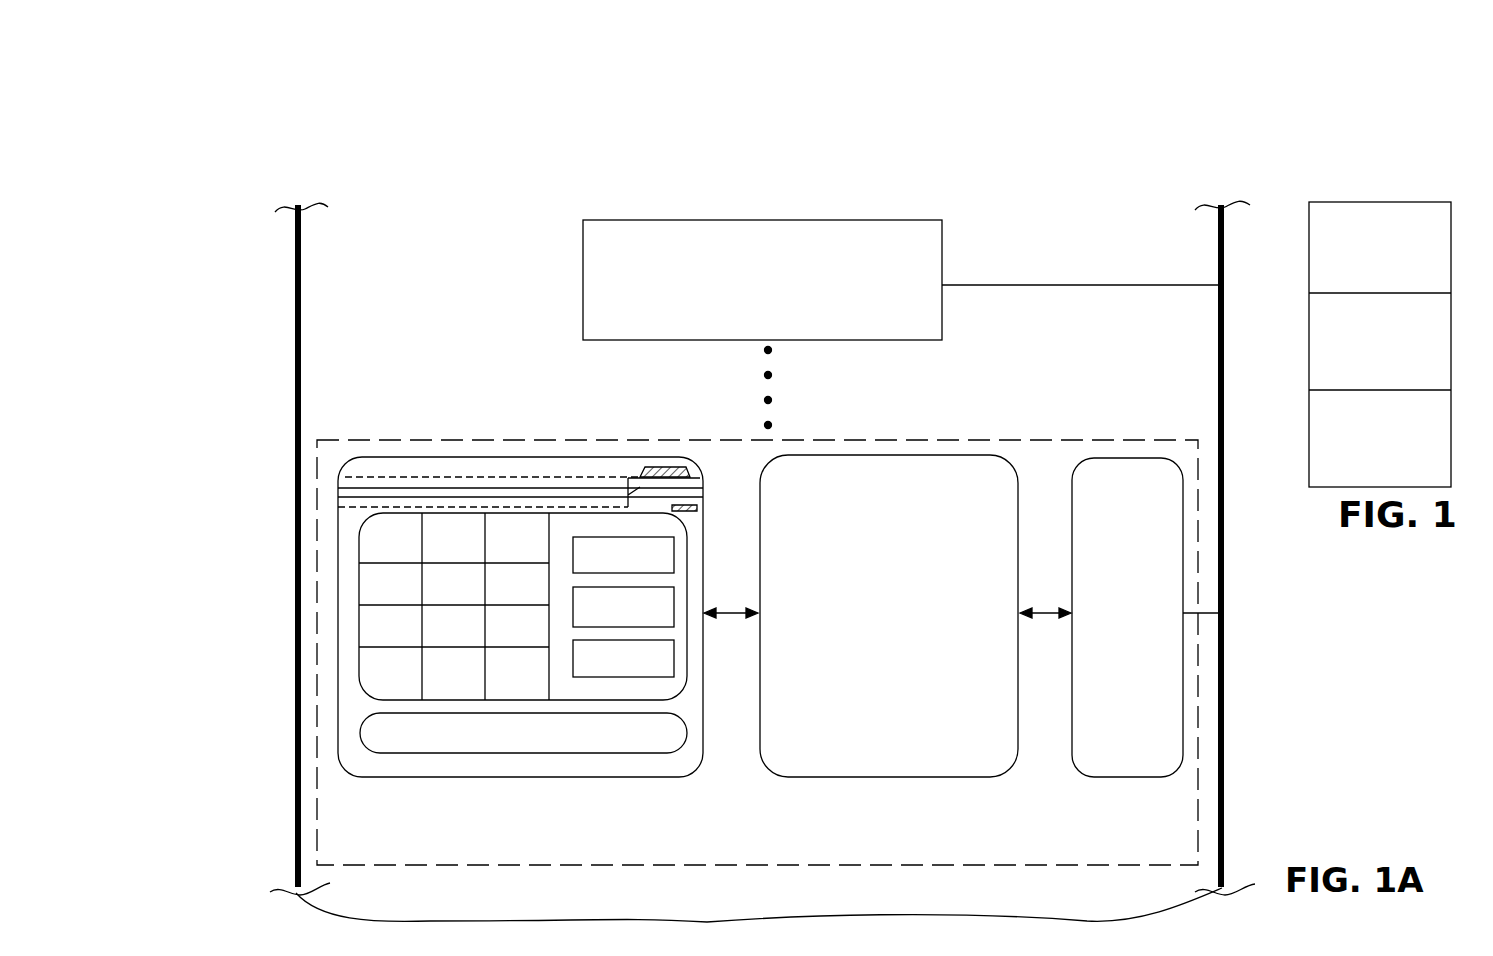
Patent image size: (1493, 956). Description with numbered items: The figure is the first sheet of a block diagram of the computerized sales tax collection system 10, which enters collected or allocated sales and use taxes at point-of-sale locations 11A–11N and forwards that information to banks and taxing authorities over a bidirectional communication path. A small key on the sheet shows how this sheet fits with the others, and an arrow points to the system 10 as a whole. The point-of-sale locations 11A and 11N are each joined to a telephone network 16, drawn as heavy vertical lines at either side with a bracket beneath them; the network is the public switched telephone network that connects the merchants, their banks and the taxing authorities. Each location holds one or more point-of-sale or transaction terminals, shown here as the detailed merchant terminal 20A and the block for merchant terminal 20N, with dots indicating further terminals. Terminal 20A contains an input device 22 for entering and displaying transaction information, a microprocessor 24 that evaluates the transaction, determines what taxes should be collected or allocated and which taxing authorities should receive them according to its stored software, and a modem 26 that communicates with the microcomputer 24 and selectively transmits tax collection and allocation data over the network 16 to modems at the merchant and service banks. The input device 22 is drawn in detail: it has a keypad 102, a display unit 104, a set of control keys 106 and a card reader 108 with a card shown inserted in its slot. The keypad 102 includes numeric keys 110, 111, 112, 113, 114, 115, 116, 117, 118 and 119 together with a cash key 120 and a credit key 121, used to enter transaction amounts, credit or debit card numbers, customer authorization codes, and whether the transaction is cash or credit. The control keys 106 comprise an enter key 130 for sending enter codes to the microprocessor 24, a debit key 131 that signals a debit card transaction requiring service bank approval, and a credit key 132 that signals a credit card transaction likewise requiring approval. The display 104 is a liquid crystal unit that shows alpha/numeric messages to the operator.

In FIG. 1, the computerized sales tax collection system 10 is at (1310, 178).
In FIG. 1A, the point-of-sale location 11N is at (1018, 177).
In FIG. 1A, the point-of-sale location 11A is at (1070, 378).
In FIG. 1A, the telephone network 16 is at (298, 800).
In FIG. 1A, the point-of-sale terminal 20N is at (700, 220).
In FIG. 1A, the point-of-sale terminal 20A is at (355, 437).
In FIG. 1A, the input device 22 is at (443, 778).
In FIG. 1A, the microprocessor 24 is at (762, 748).
In FIG. 1A, the modem 26 is at (1125, 777).
In FIG. 1A, the keypad 102 is at (440, 644).
In FIG. 1A, the display unit 104 is at (547, 753).
In FIG. 1A, the set of control keys 106 is at (705, 422).
In FIG. 1A, the card reader 108 is at (680, 483).
In FIG. 1A, the numeric key 110 is at (382, 528).
In FIG. 1A, the numeric key 111 is at (467, 530).
In FIG. 1A, the numeric key 112 is at (510, 527).
In FIG. 1A, the numeric key 113 is at (372, 578).
In FIG. 1A, the numeric key 114 is at (440, 573).
In FIG. 1A, the numeric key 115 is at (540, 568).
In FIG. 1A, the numeric key 116 is at (372, 622).
In FIG. 1A, the numeric key 117 is at (433, 636).
In FIG. 1A, the numeric key 118 is at (540, 630).
In FIG. 1A, the numeric key 119 is at (372, 670).
In FIG. 1A, the cash key 120 is at (428, 687).
In FIG. 1A, the credit key 121 is at (530, 688).
In FIG. 1A, the enter key 130 is at (612, 540).
In FIG. 1A, the debit key 131 is at (663, 607).
In FIG. 1A, the credit key 132 is at (668, 652).